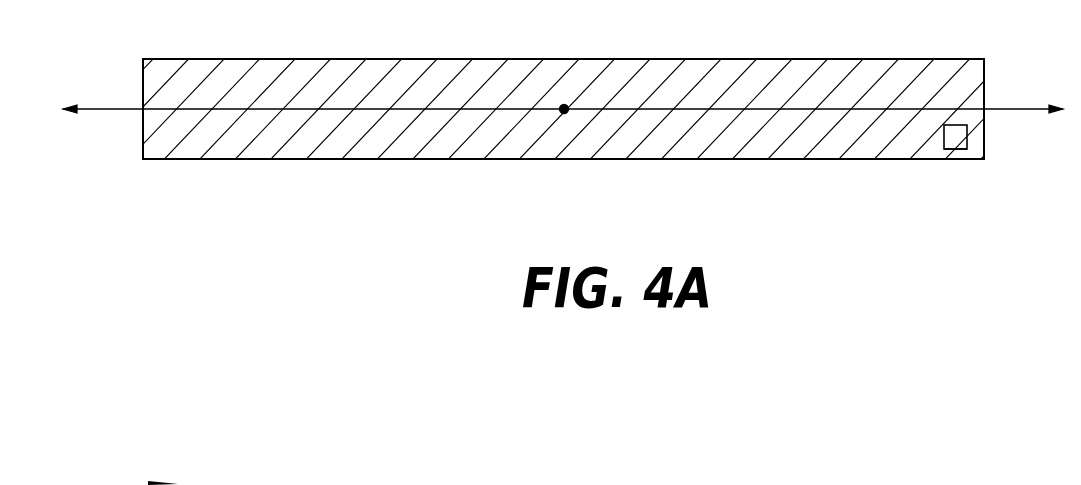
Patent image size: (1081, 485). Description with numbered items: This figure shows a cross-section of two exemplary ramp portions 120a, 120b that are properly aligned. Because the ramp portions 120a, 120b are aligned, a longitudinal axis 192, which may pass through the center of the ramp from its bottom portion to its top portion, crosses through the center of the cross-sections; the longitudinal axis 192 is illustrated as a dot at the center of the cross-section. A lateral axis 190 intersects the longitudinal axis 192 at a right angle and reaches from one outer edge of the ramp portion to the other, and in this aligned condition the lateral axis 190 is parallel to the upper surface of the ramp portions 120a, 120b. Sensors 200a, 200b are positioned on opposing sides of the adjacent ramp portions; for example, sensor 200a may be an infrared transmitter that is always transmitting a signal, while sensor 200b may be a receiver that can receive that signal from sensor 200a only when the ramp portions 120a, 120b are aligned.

The ramp portion 120a is at (660, 133).
The ramp portion 120b is at (779, 160).
The lateral axis 190 is at (94, 109).
The longitudinal axis 192 is at (560, 113).
The sensor 200a is at (962, 135).
The sensor 200b is at (953, 160).